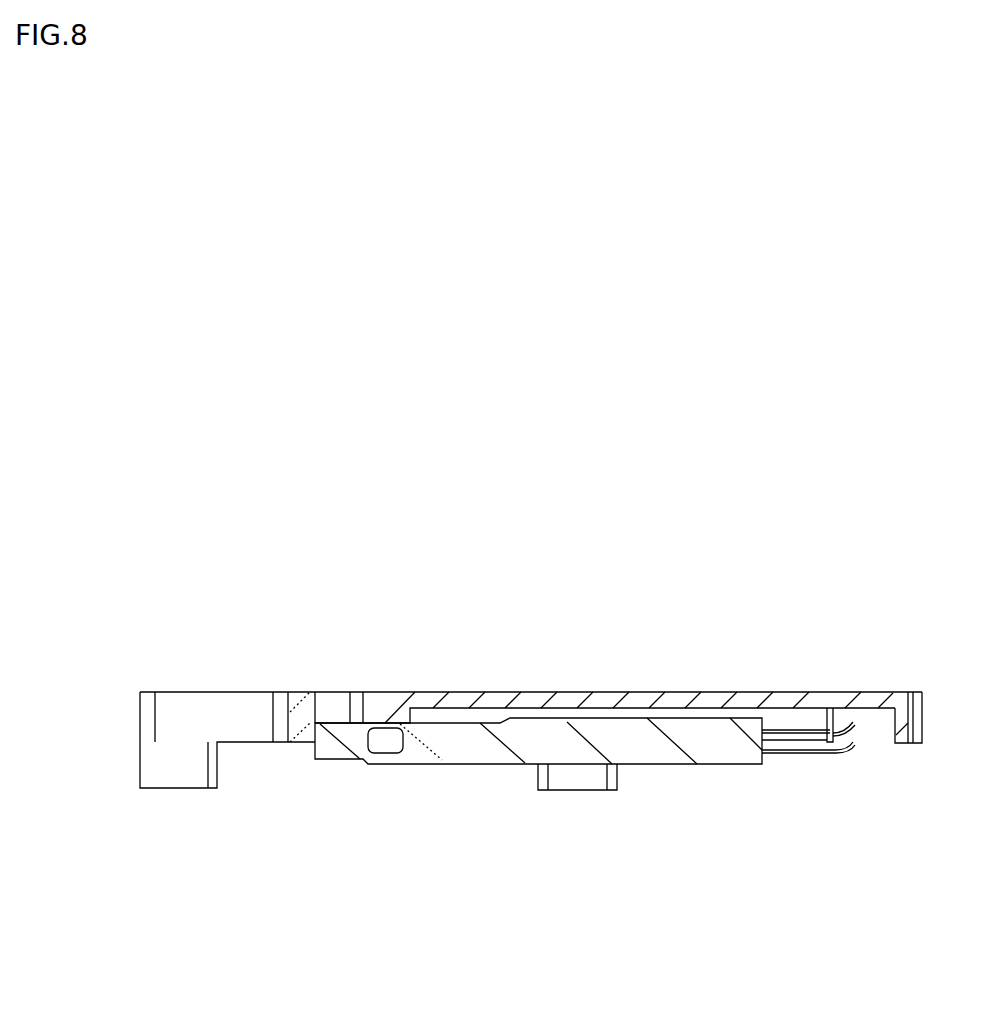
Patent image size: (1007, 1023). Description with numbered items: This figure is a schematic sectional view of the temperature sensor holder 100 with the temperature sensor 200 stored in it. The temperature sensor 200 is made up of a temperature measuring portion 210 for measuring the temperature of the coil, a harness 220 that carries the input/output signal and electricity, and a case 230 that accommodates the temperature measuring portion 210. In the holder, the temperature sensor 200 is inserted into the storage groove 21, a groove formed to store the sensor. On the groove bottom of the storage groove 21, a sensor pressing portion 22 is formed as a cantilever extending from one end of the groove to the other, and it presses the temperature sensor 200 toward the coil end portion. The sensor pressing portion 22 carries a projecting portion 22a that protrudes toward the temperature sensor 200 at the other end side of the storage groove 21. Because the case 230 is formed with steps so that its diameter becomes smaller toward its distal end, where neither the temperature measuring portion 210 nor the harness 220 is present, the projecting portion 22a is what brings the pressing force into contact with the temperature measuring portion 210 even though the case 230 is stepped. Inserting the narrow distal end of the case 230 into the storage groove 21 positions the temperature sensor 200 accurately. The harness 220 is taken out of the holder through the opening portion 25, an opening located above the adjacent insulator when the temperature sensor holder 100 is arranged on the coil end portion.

The temperature sensor holder 100 is at (538, 683).
The storage groove 21 is at (358, 690).
The sensor pressing portion 22 is at (571, 700).
The projecting portion 22a is at (387, 712).
The opening portion 25 is at (853, 718).
The temperature sensor 200 is at (585, 796).
The temperature measuring portion 210 is at (388, 744).
The harness 220 is at (827, 756).
The case 230 is at (673, 767).